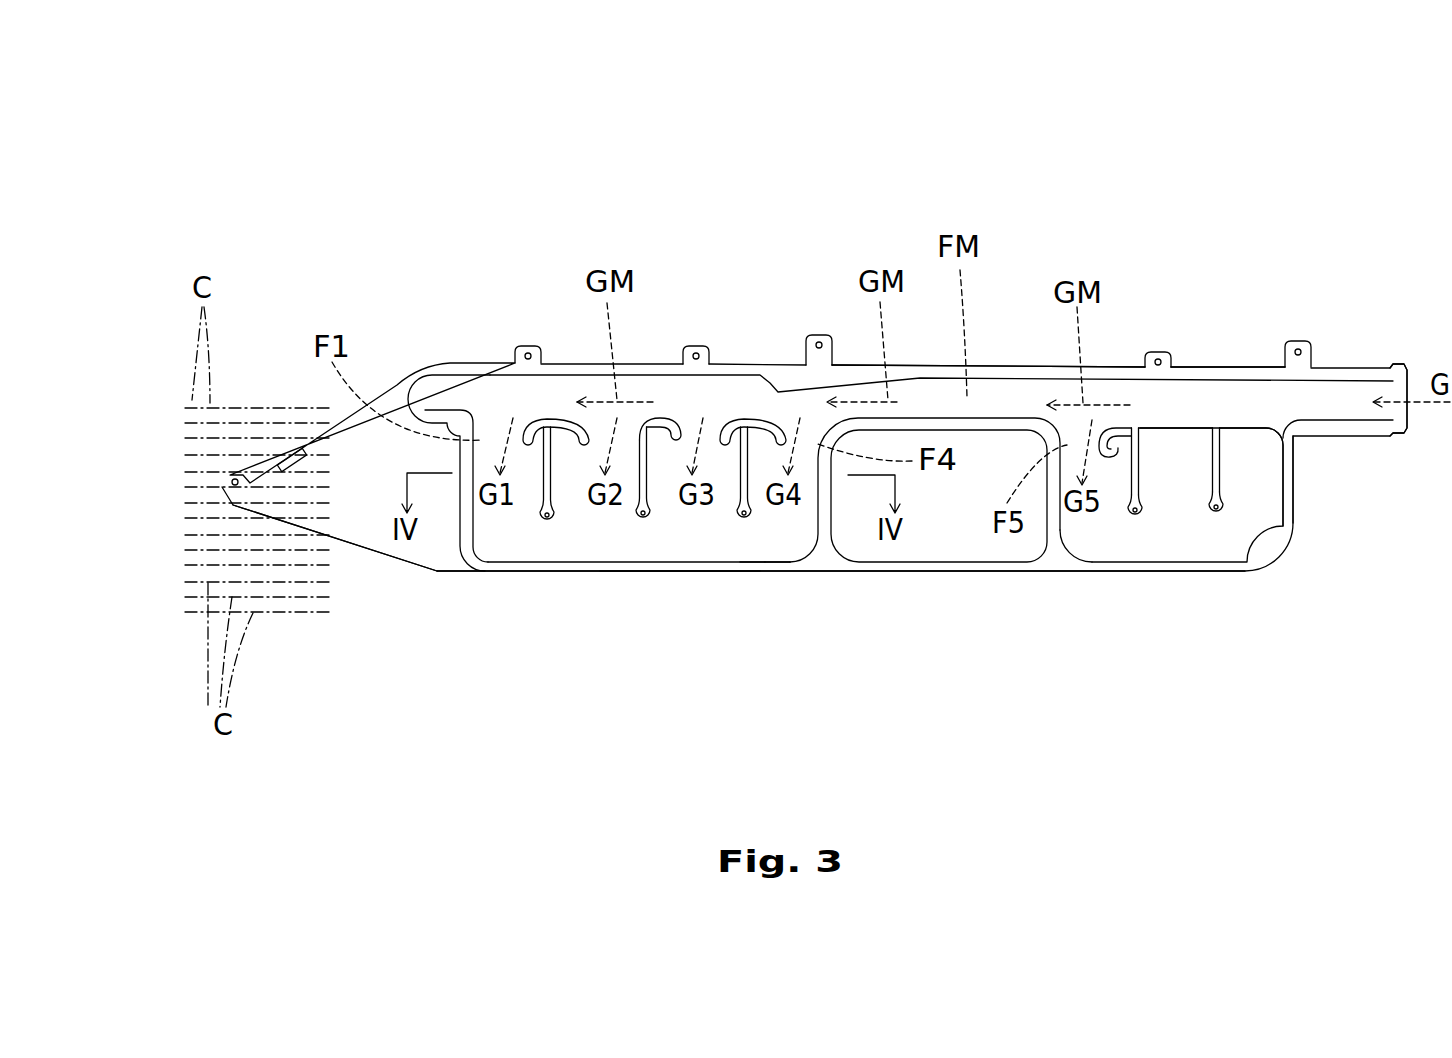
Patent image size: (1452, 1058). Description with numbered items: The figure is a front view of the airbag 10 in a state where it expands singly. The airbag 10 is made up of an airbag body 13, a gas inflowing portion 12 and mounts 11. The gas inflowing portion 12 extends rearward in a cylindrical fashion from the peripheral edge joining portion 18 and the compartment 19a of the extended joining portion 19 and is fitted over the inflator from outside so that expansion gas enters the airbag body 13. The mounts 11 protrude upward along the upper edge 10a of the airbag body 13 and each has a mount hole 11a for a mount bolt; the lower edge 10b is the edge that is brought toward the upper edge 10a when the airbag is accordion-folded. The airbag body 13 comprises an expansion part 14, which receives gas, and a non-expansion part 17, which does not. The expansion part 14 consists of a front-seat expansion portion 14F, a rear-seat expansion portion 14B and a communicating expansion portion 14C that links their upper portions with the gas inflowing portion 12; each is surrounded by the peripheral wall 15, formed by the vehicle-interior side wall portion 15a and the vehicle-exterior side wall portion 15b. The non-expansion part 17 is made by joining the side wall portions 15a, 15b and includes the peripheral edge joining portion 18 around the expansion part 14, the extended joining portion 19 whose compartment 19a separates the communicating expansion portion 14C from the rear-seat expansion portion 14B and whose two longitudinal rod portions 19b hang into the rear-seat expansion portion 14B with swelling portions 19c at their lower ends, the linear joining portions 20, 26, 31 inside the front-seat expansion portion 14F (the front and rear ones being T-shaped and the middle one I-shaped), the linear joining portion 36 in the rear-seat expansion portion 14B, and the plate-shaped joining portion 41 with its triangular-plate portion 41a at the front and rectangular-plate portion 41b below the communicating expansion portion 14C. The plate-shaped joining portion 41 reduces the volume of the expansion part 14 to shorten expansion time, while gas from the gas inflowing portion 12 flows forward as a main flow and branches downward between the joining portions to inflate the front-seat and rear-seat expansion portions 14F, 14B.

The airbag 10 is at (1403, 173).
The upper edge 10a is at (927, 365).
The airbag lower edge 10b is at (677, 573).
The mount 11 is at (220, 484).
The mount hole 11a is at (234, 479).
The gas inflowing portion 12 is at (1338, 400).
The airbag body 13 is at (1228, 346).
The expansion part 14 is at (940, 463).
The rear-seat expansion portion 14B is at (1167, 545).
The communicating expansion portion 14C is at (1000, 395).
The front-seat expansion portion 14F is at (595, 540).
The peripheral wall 15 is at (781, 661).
The vehicle-interior side wall portion 15a is at (752, 546).
The vehicle-exterior side wall portion 15b is at (775, 548).
The non-expansion part 17 is at (739, 559).
The peripheral edge joining portion 18 is at (462, 512).
The extended joining portion 19 is at (1264, 543).
The compartment 19a is at (1237, 425).
The longitudinal rod portion 19b is at (1138, 457).
The swelling portion 19c is at (1135, 515).
The linear joining portion 20 is at (547, 517).
The linear joining portion 26 is at (643, 515).
The linear joining portion 31 is at (747, 517).
The linear joining portion 36 is at (1100, 558).
The plate-shaped joining portion 41 is at (739, 624).
The triangular-plate portion 41a is at (356, 530).
The rectangular-plate portion 41b is at (1002, 563).